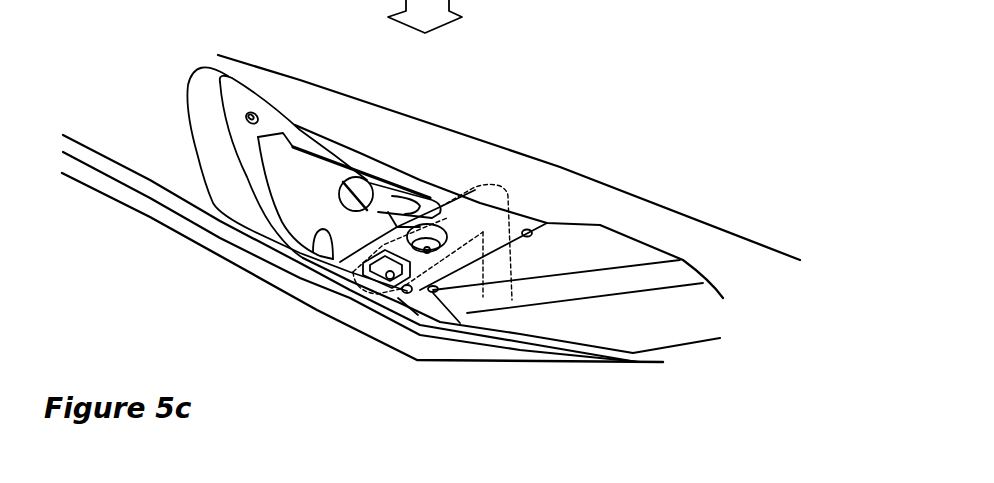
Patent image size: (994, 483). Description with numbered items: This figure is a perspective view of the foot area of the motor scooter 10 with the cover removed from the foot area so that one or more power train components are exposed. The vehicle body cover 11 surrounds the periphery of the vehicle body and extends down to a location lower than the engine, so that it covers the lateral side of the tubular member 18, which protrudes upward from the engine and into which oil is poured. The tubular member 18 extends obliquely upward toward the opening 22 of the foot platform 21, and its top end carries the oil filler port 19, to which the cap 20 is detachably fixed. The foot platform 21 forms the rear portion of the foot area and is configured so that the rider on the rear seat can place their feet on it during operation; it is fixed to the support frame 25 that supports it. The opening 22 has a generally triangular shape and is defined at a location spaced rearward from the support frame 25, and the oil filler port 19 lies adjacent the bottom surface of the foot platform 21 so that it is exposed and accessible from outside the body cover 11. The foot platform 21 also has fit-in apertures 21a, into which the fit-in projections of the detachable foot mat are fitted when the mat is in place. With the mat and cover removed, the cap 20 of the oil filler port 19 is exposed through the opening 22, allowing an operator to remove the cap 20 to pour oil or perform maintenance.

The motor scooter 10 is at (537, 0).
The vehicle body cover 11 is at (604, 0).
The tubular member 18 is at (407, 192).
The oil filler port 19 is at (380, 175).
The cap 20 is at (341, 177).
The foot platform 21 is at (396, 292).
The fit-in apertures 21a is at (252, 125).
The opening 22 is at (330, 240).
The support frame 25 is at (475, 187).